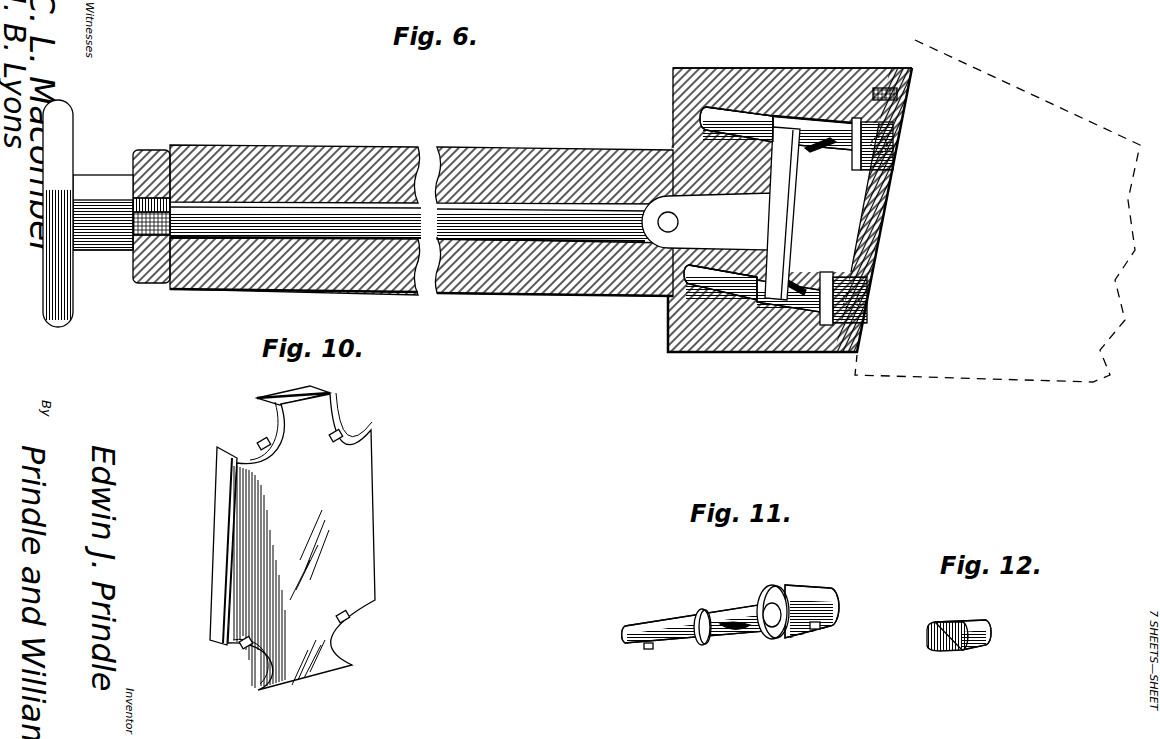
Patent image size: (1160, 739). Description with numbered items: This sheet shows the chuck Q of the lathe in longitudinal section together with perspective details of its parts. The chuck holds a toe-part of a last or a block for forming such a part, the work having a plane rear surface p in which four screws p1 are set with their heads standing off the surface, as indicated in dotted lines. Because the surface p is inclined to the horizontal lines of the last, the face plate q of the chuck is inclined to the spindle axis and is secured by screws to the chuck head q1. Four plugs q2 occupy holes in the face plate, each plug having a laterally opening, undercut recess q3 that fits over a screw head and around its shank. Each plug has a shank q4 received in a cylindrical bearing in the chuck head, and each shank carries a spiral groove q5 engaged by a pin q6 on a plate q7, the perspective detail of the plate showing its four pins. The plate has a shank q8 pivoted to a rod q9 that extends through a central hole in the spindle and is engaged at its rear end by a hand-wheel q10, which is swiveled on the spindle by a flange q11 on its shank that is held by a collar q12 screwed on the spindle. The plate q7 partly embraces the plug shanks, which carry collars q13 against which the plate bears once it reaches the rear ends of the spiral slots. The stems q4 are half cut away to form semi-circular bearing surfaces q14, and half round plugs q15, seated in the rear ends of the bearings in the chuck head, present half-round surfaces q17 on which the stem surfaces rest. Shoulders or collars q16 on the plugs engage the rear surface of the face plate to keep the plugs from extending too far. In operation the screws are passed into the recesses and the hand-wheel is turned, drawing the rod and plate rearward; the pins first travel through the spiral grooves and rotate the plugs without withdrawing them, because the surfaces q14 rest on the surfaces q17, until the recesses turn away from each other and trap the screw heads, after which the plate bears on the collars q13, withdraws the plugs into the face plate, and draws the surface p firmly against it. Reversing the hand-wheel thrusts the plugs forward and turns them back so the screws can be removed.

In FIG. 6, the face plate q is at (893, 183).
In FIG. 6, the chuck head q1 is at (740, 77).
In FIG. 6, the plug q2 is at (903, 138).
In FIG. 11, the plug q2 is at (810, 579).
In FIG. 11, the laterally opening recess q3 is at (815, 630).
In FIG. 6, the shank q4 is at (710, 107).
In FIG. 6, the spiral groove q5 is at (822, 153).
In FIG. 11, the spiral groove q5 is at (735, 634).
In FIG. 10, the pin q6 is at (262, 445).
In FIG. 6, the plate q7 is at (782, 218).
In FIG. 10, the plate q7 is at (292, 538).
In FIG. 6, the shank q8 is at (707, 221).
In FIG. 6, the rod q9 is at (343, 207).
In FIG. 6, the hand-wheel q10 is at (45, 291).
In FIG. 6, the flange q11 is at (132, 186).
In FIG. 6, the collar q12 is at (141, 272).
In FIG. 6, the collar q13 is at (833, 272).
In FIG. 11, the collar q13 is at (780, 586).
In FIG. 11, the semi-circular bearing surface q14 is at (625, 645).
In FIG. 6, the half round plug q15 is at (702, 118).
In FIG. 12, the half round plug q15 is at (978, 628).
In FIG. 6, the shoulder or collar q16 is at (774, 117).
In FIG. 11, the shoulder or collar q16 is at (702, 610).
In FIG. 12, the half-round surface q17 is at (932, 646).
In FIG. 6, the chuck Q is at (828, 130).
In FIG. 11, the chuck Q is at (732, 610).
In FIG. 6, the plane rear surface P is at (922, 50).
In FIG. 6, the screw p1 is at (890, 135).